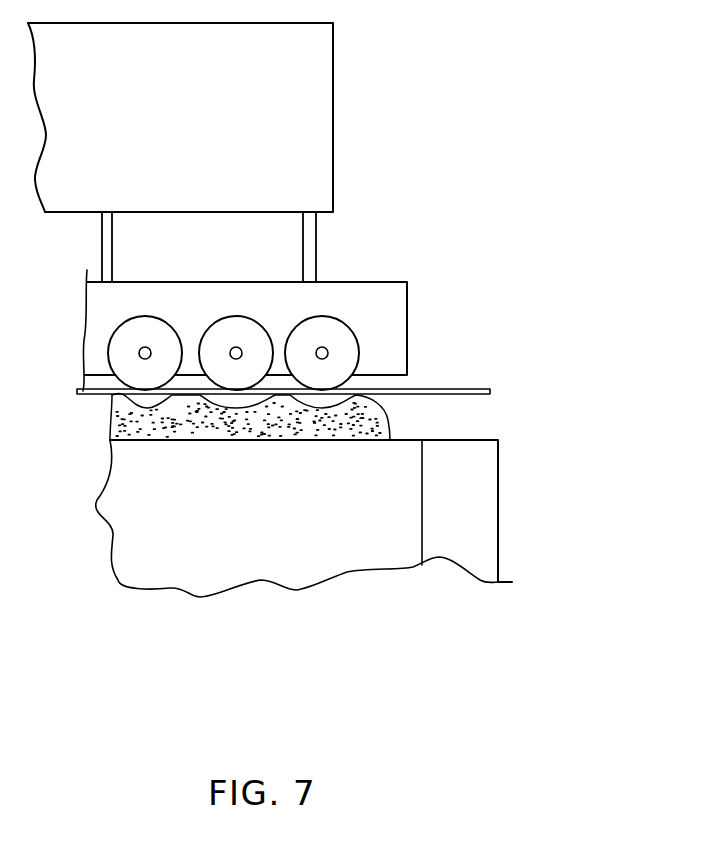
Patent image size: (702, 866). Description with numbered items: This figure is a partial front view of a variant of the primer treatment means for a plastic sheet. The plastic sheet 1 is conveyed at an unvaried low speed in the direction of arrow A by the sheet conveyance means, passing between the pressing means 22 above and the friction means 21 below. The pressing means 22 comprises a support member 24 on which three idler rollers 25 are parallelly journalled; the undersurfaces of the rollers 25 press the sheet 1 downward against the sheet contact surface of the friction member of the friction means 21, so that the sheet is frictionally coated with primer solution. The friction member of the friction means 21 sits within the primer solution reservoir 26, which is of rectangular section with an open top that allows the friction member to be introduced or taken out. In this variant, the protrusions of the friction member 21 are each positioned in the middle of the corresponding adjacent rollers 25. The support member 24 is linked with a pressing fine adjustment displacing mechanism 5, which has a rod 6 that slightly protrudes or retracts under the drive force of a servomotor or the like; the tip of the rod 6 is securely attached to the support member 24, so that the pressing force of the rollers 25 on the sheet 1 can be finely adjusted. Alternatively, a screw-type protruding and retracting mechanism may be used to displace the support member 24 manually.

The pressing fine adjustment displacing mechanism 5 is at (315, 60).
The rod 6 is at (312, 235).
The pressing means 22 is at (312, 288).
The support member 24 is at (410, 288).
The idler rollers 25 is at (145, 330).
The plastic sheet 1 is at (448, 377).
The primer solution reservoir 26 is at (252, 550).
The friction means 21 is at (323, 433).
The direction of conveyance A is at (509, 385).